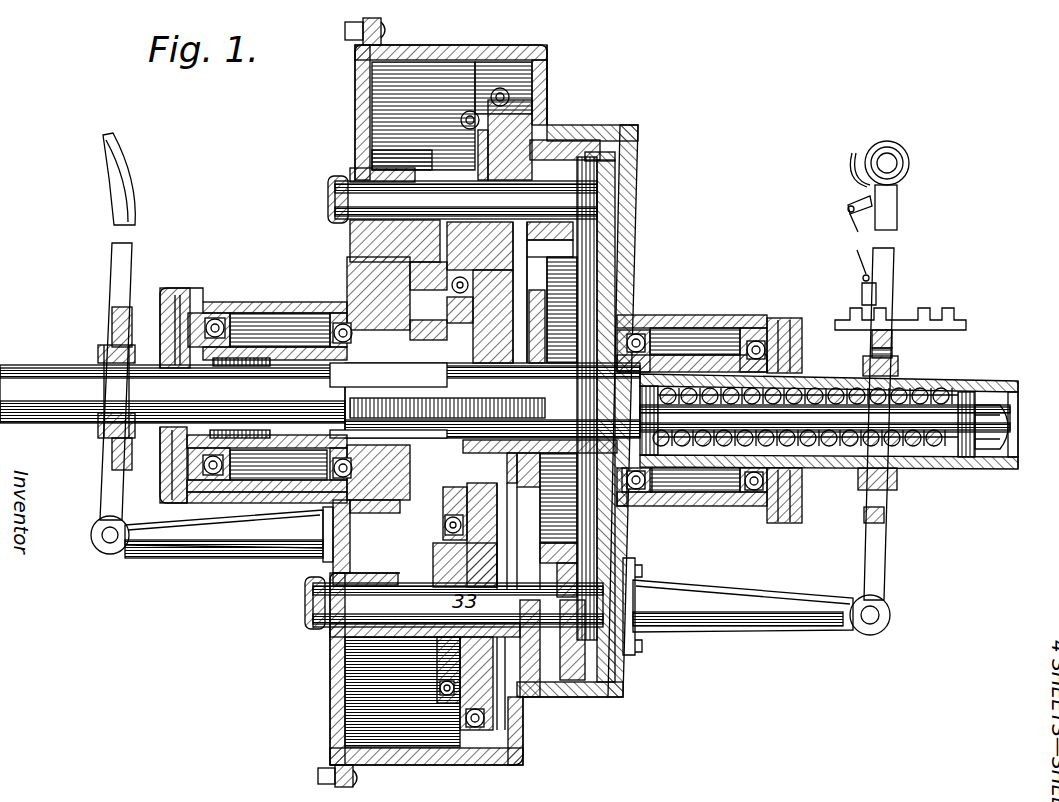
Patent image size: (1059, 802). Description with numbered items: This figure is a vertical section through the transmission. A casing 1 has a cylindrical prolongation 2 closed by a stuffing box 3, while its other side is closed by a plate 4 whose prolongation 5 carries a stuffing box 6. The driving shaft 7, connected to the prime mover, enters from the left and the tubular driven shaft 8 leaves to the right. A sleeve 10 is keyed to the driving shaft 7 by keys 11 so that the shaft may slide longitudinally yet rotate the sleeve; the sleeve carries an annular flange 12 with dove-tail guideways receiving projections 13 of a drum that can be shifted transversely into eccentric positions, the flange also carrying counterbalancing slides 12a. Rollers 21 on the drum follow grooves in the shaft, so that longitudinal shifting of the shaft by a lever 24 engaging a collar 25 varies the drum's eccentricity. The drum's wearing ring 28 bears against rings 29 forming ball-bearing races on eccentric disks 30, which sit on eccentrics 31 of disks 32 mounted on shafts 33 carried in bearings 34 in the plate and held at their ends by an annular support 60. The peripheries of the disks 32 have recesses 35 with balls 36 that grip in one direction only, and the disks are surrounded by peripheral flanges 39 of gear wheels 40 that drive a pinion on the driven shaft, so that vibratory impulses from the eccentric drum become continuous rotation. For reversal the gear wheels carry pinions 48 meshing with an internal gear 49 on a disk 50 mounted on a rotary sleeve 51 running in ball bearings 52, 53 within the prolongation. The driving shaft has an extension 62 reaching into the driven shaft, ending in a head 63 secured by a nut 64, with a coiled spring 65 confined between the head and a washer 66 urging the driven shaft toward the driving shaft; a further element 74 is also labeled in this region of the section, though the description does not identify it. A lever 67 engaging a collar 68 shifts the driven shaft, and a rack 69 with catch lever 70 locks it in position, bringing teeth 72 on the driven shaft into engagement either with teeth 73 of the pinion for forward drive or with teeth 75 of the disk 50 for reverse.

The casing 1 is at (630, 206).
The prolongation 2 is at (700, 315).
The stuffing box 3 is at (798, 318).
The plate 4 is at (360, 118).
The prolongation 5 is at (288, 302).
The stuffing box 6 is at (185, 300).
The driving shaft 7 is at (172, 394).
The driven shaft 8 is at (950, 469).
The sleeve 10 is at (270, 455).
The keys 11 is at (345, 390).
The annular flange 12 is at (310, 360).
The counterbalancing slides 12a is at (365, 515).
The projections 13 is at (397, 298).
The wheels or rollers 21 is at (438, 470).
The lever 24 is at (134, 245).
The collar 25 is at (100, 360).
The wearing ring 28 is at (452, 283).
The rings 29 is at (423, 116).
The eccentric disks 30 is at (476, 117).
The eccentrics 31 is at (396, 241).
The disks 32 is at (505, 160).
The shafts 33 is at (462, 199).
The bearings 34 is at (388, 175).
The recesses 35 is at (515, 690).
The balls 36 is at (512, 728).
The peripheral flanges 39 is at (492, 85).
The gear wheels 40 is at (548, 110).
The pinions 48 is at (590, 142).
The internal gear 49 is at (580, 158).
The disk 50 is at (612, 170).
The rotary sleeve 51 is at (705, 345).
The ball bearing arrangement 52 is at (650, 332).
The ball bearing arrangement 53 is at (758, 335).
The annular support 60 is at (547, 547).
The extension 62 is at (833, 469).
The head 63 is at (1013, 406).
The nut 64 is at (1005, 440).
The coiled spring 65 is at (905, 469).
The washer 66 is at (664, 494).
The lever 67 is at (860, 272).
The collar 68 is at (866, 362).
The rack 69 is at (925, 322).
The catch lever 70 is at (870, 270).
The side projections or teeth 72 is at (530, 340).
The projections or teeth 73 is at (552, 352).
The shaft extension 74 is at (520, 370).
The teeth 75 is at (628, 328).